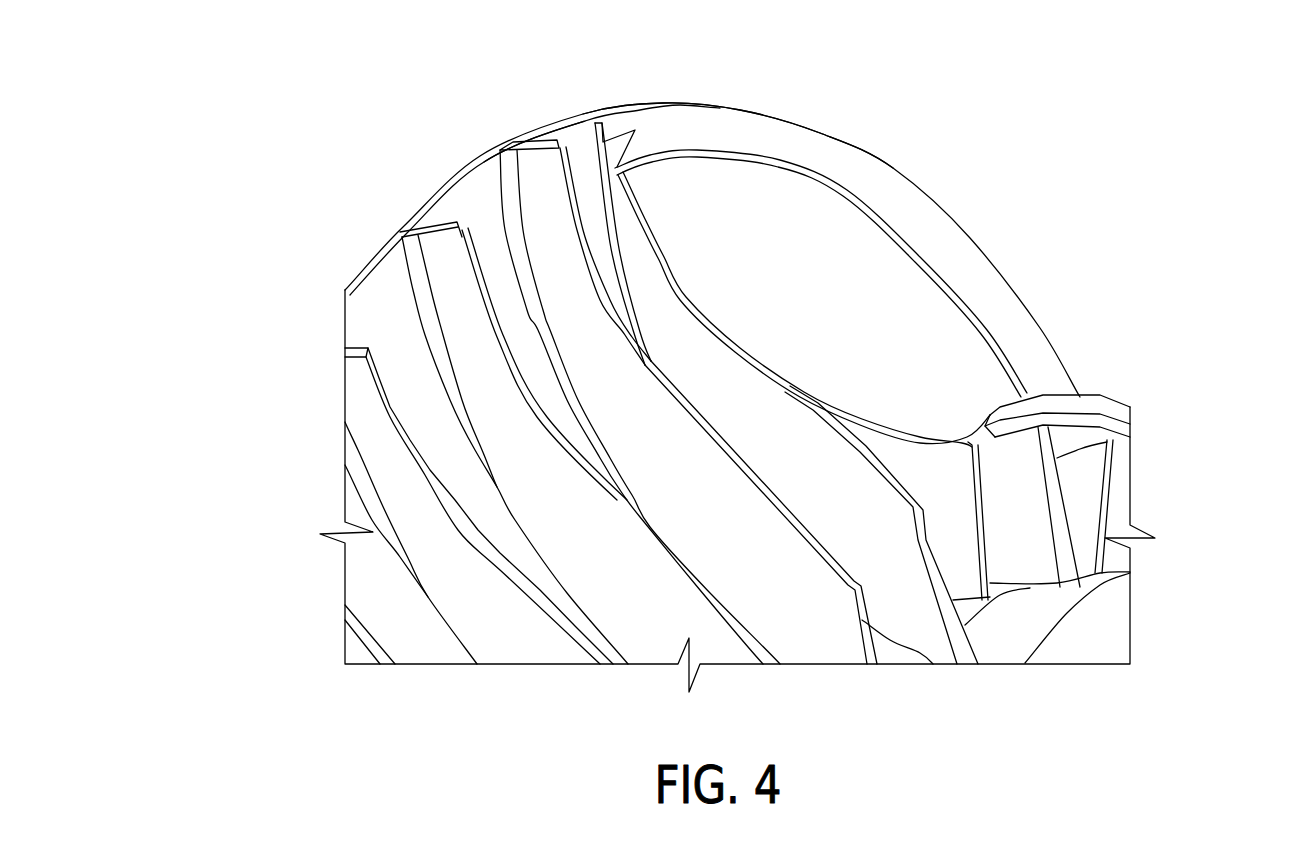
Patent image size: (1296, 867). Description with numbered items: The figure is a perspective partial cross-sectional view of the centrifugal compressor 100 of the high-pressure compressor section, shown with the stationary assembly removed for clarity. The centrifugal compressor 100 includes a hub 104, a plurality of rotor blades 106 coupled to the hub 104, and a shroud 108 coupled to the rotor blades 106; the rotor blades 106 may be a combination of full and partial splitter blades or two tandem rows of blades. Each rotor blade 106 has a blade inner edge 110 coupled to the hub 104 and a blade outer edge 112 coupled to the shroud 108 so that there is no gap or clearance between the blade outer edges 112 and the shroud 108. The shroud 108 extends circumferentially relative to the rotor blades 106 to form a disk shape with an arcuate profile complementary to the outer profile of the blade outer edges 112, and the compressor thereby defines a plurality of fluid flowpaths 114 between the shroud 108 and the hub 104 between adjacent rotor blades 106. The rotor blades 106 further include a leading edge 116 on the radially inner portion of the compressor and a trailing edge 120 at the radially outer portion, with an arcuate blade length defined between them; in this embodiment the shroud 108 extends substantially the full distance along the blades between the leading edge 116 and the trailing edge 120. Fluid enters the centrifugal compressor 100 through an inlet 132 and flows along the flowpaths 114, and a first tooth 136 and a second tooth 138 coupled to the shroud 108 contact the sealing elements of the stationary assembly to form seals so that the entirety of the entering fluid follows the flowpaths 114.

The centrifugal compressor 100 is at (746, 383).
The hub 104 is at (377, 280).
The rotor blades 106 is at (434, 506).
The shroud 108 is at (857, 326).
The blade inner edge 110 is at (403, 252).
The blade outer edge 112 is at (463, 237).
The fluid flowpath 114 is at (655, 323).
The leading edge 116 is at (858, 617).
The trailing edge 120 is at (517, 142).
The inlet 132 is at (1017, 487).
The first tooth 136 is at (1082, 405).
The second tooth 138 is at (768, 142).